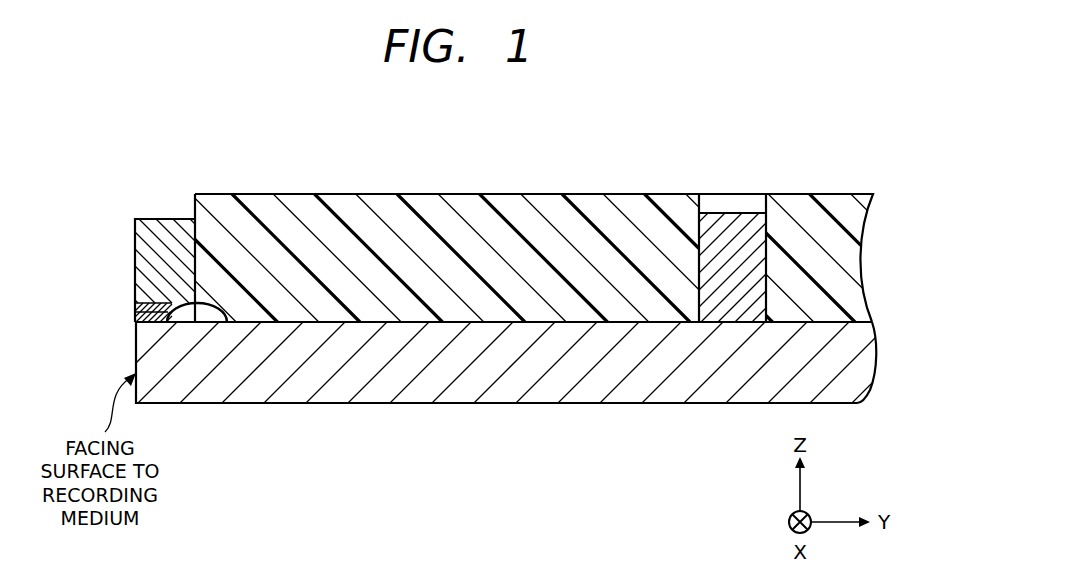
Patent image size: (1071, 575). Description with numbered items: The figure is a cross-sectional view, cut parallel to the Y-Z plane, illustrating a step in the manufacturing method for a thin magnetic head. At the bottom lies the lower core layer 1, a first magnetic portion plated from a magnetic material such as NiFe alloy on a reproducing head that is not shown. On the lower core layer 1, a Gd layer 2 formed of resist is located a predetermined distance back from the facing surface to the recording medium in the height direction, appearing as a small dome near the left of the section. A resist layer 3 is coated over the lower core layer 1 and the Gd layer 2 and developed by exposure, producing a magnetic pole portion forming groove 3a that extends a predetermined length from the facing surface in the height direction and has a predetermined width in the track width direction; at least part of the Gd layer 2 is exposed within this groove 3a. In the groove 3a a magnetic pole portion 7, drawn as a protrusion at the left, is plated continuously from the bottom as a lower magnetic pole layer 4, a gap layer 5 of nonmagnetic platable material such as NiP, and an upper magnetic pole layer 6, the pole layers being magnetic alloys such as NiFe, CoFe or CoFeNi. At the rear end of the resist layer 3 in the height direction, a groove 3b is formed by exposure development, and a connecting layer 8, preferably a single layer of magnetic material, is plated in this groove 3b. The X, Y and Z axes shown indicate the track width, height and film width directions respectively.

The lower core layer 1 is at (548, 383).
The Gd layer 2 is at (211, 318).
The resist layer 3 is at (452, 226).
The magnetic pole portion forming groove 3a is at (175, 197).
The groove 3b is at (729, 206).
The lower magnetic pole layer 4 is at (142, 317).
The gap layer 5 is at (150, 307).
The upper magnetic pole layer 6 is at (145, 245).
The magnetic pole portion 7 is at (86, 192).
The connecting layer 8 is at (713, 240).